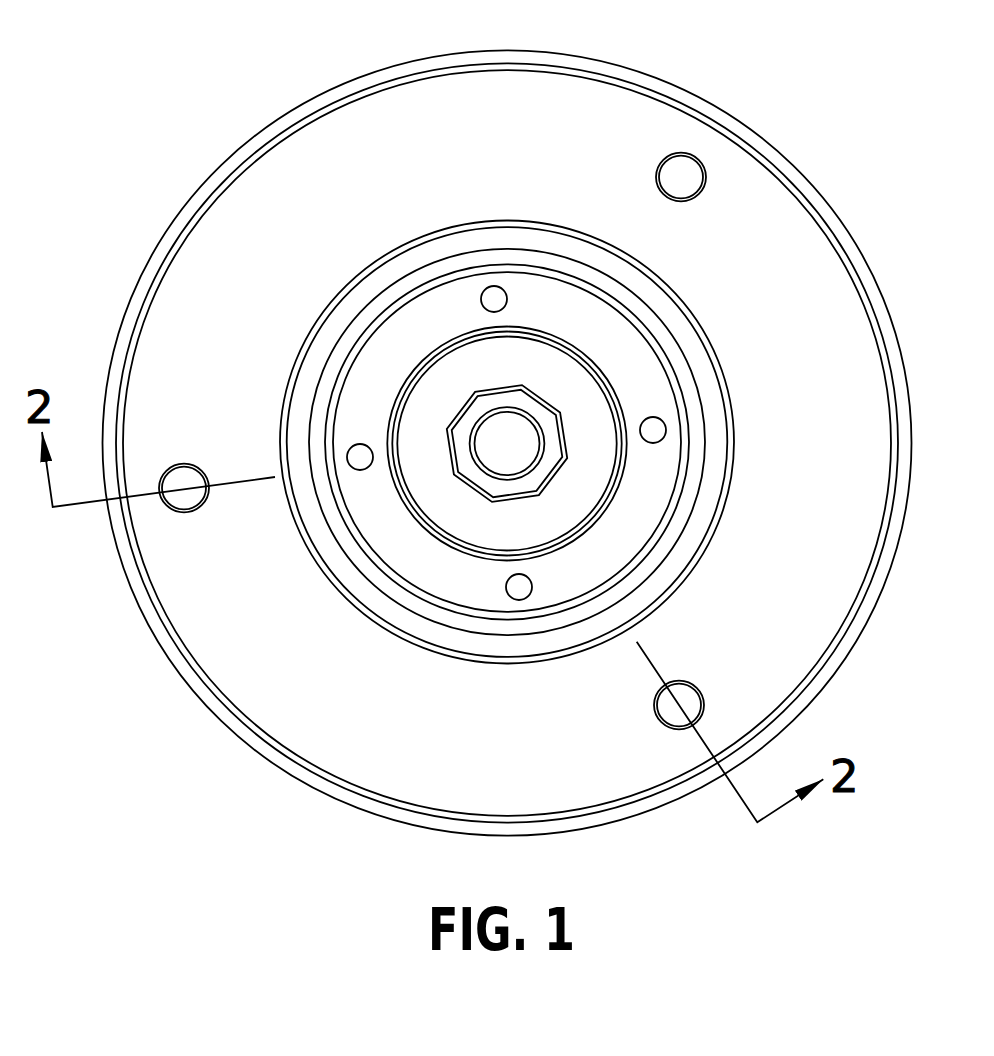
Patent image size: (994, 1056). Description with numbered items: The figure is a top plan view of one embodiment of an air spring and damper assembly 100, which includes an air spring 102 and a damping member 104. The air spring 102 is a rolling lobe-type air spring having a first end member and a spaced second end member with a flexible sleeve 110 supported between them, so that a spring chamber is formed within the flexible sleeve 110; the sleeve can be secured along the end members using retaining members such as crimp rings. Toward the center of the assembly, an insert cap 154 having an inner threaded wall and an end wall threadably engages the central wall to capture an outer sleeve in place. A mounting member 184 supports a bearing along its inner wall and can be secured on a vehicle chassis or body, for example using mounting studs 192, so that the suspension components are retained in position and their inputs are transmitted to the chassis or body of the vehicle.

The air spring and damper assembly 100 is at (228, 138).
The air spring 102 is at (662, 90).
The flexible sleeve 110 is at (320, 95).
The insert cap 154 is at (605, 330).
The damping member 104 is at (528, 425).
The mounting member 184 is at (330, 702).
The mounting studs 192 is at (681, 681).